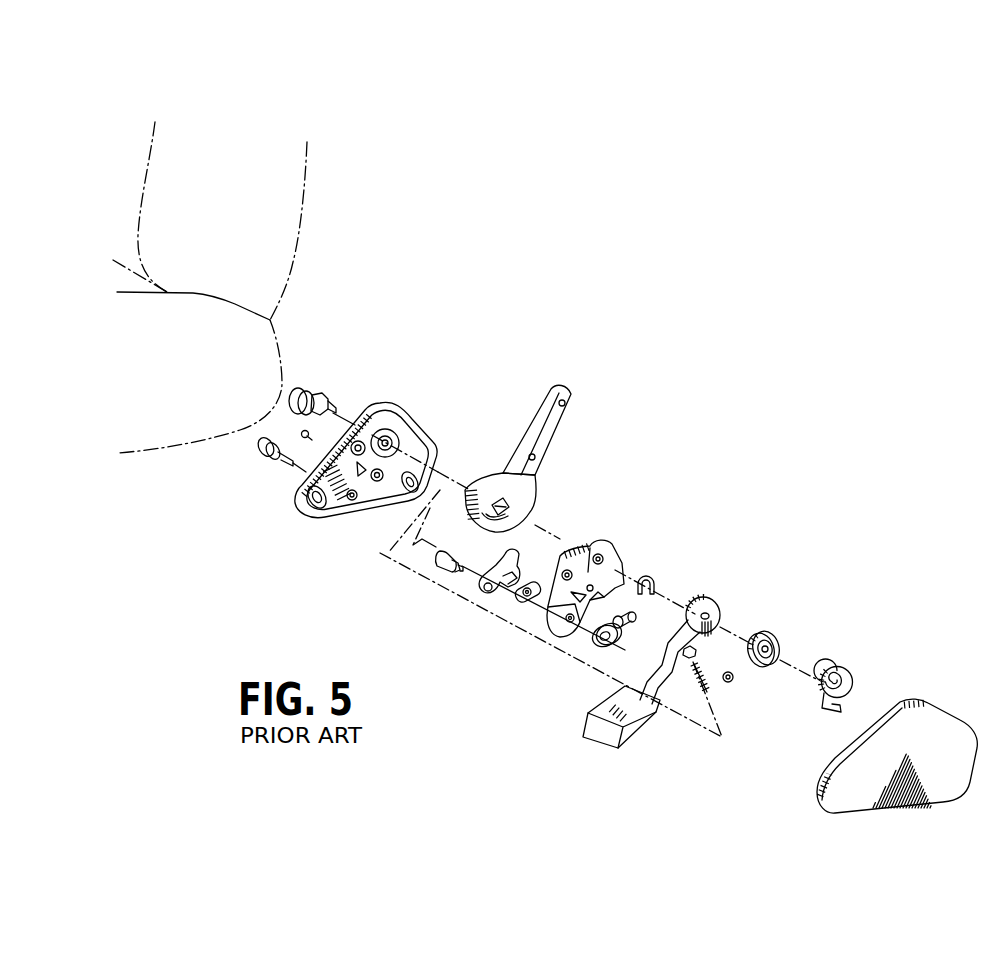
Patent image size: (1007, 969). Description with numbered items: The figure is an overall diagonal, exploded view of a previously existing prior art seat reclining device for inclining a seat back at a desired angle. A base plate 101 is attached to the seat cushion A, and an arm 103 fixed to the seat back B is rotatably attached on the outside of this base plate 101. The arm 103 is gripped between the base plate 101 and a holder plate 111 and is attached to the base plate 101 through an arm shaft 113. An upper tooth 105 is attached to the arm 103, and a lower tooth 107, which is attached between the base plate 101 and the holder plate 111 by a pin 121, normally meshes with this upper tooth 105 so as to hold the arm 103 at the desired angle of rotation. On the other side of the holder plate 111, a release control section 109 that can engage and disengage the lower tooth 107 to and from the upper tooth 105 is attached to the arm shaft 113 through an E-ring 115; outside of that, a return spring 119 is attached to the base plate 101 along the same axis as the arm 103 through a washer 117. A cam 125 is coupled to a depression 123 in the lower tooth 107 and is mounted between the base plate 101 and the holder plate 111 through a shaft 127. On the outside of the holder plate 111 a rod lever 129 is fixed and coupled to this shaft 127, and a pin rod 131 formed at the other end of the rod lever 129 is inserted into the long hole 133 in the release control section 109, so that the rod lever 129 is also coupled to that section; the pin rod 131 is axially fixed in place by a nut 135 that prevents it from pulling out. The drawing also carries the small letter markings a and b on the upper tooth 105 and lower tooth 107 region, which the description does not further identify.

The base plate 101 is at (414, 416).
The arm 103 is at (552, 428).
The upper tooth 105 is at (509, 507).
The lower tooth 107 is at (514, 562).
The release control section 109 is at (643, 700).
The holder plate 111 is at (618, 558).
The arm shaft 113 is at (315, 397).
The E-ring 115 is at (655, 579).
The washer 117 is at (768, 630).
The return spring 119 is at (843, 690).
The pin 121 is at (437, 566).
The depression 123 is at (513, 580).
The cam 125 is at (537, 596).
The shaft 127 is at (268, 457).
The rod lever 129 is at (621, 641).
The pin rod 131 is at (634, 619).
The long hole 133 is at (694, 652).
The nut 135 is at (731, 681).
The seat cushion A is at (175, 435).
The seat back B is at (283, 258).
The arcuate slot a is at (476, 525).
The engagement portion b is at (505, 552).